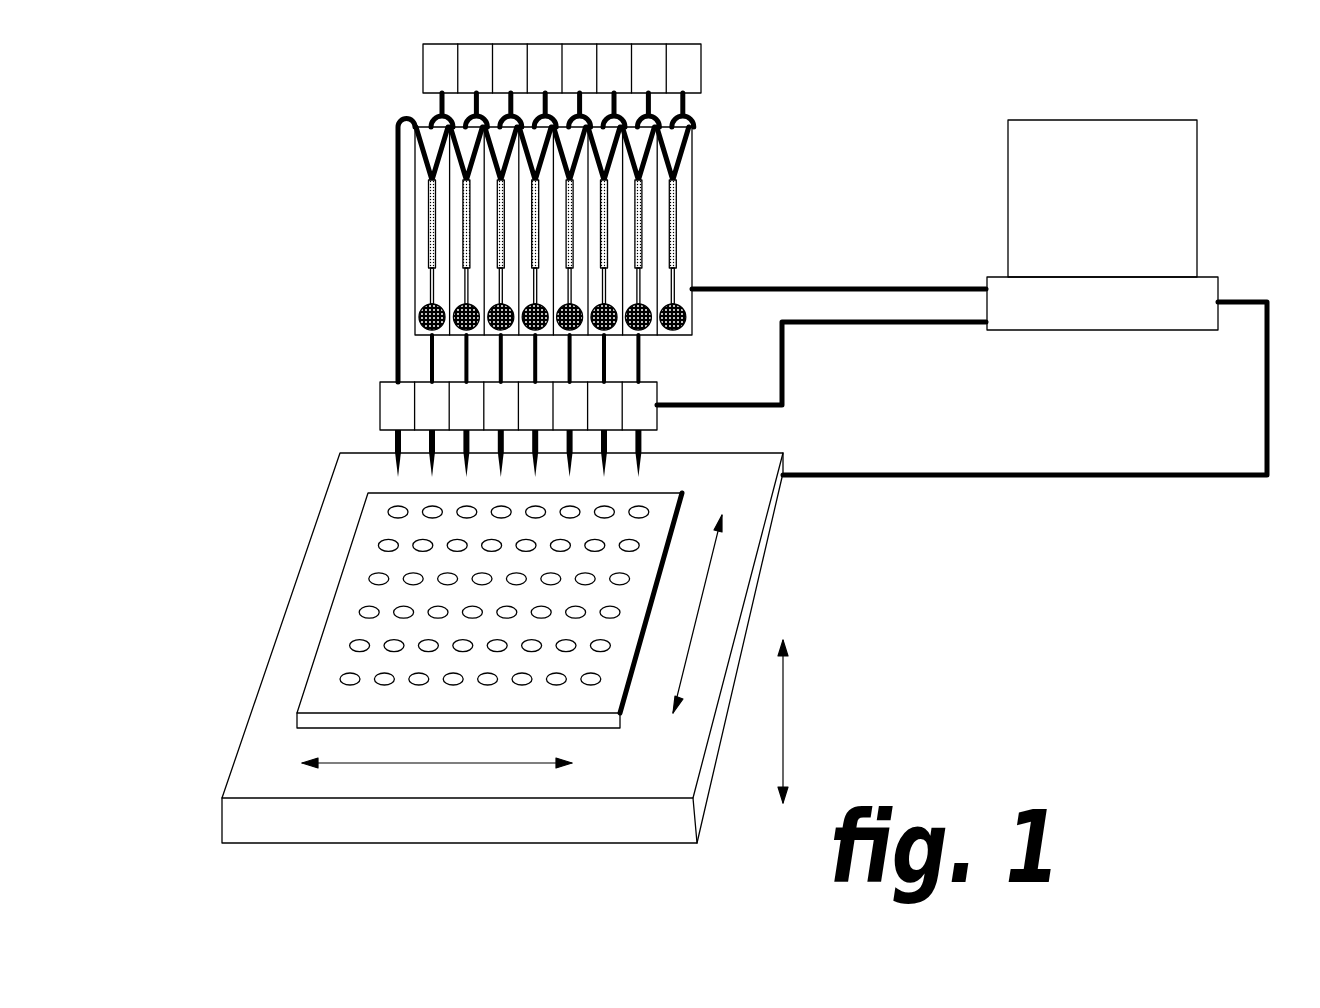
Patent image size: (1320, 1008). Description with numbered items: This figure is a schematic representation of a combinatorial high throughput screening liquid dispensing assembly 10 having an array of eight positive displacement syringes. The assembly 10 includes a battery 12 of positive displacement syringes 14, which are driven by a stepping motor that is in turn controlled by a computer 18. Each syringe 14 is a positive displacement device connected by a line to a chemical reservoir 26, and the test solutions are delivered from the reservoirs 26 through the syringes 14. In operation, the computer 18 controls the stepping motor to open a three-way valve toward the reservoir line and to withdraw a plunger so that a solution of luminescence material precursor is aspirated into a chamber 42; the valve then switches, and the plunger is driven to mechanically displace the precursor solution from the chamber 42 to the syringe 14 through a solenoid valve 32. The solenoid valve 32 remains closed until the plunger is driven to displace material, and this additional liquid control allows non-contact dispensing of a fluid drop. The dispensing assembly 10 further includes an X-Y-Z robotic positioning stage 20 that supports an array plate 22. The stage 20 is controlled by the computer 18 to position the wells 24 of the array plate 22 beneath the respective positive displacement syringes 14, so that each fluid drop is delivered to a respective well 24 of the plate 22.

The assembly 10 is at (870, 160).
The battery 12 is at (692, 183).
The positive displacement syringes 14 is at (463, 190).
The computer 18 is at (1197, 180).
The X-Y-Z robotic positioning stage 20 is at (760, 573).
The array plate 22 is at (683, 502).
The wells 24 is at (388, 512).
The reservoirs 26 is at (701, 68).
The solenoid valve 32 is at (380, 405).
The chamber 42 is at (642, 302).